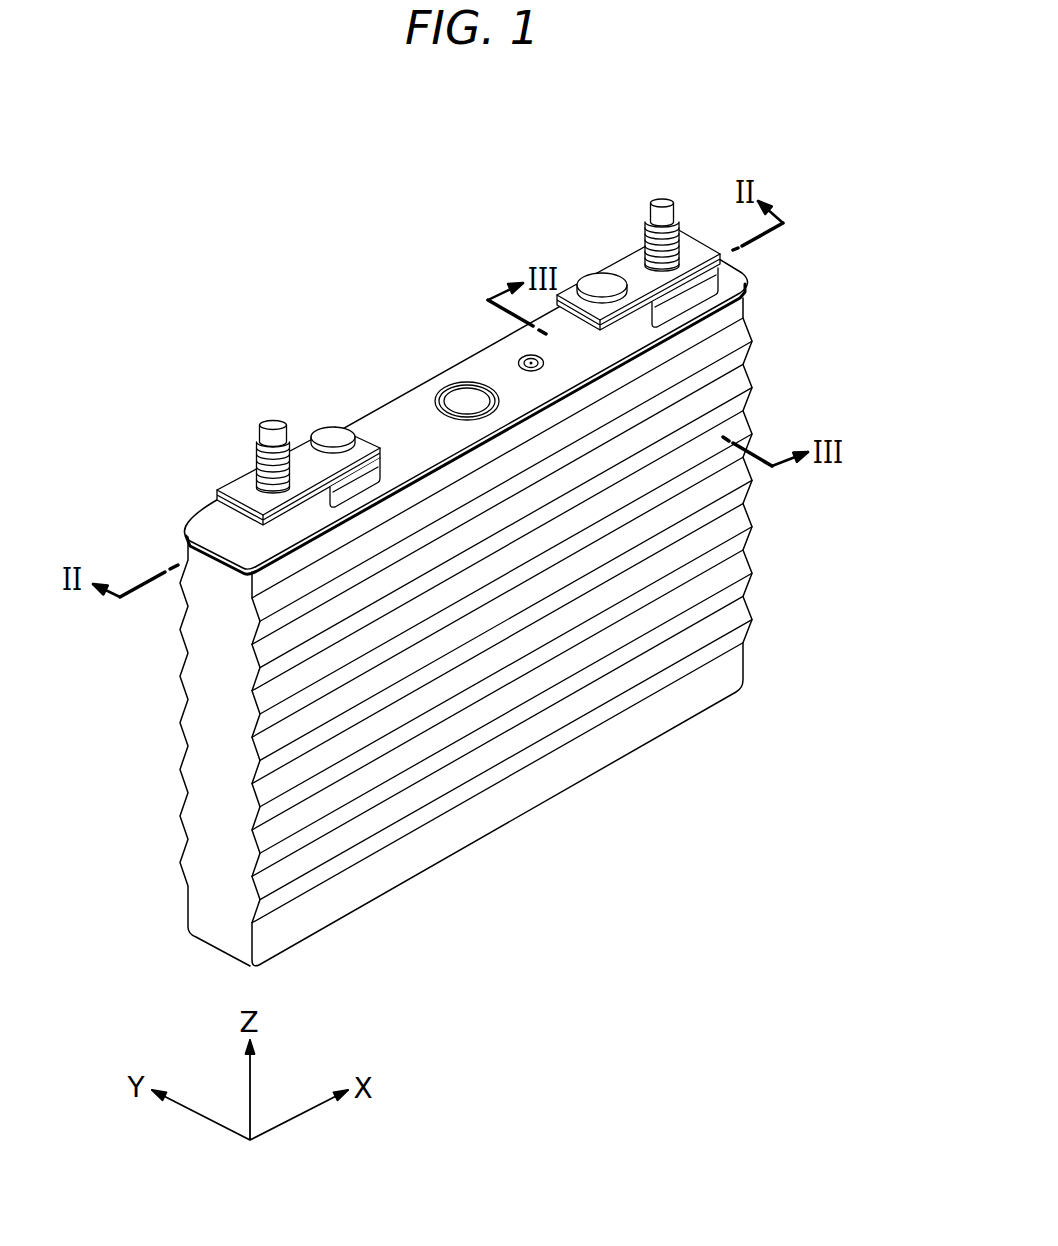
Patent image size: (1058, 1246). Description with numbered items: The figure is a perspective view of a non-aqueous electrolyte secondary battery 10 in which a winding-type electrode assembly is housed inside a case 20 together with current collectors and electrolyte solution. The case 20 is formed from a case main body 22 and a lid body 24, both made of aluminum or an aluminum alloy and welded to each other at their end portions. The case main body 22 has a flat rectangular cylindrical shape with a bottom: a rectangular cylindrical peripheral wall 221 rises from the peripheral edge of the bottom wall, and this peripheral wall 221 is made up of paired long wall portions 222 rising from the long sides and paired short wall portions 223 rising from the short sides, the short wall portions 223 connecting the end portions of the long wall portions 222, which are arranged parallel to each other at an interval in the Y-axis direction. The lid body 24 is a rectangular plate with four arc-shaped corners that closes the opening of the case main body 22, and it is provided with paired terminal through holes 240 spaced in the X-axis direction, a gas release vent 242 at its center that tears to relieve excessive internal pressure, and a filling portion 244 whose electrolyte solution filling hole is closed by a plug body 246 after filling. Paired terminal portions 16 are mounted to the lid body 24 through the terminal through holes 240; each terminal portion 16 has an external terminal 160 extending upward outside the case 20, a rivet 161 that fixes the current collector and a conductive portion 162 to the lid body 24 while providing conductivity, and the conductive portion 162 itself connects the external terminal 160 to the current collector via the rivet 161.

The battery 10 is at (745, 143).
The terminal portion 16 is at (298, 424).
The external terminal 160 is at (256, 447).
The rivet 161 is at (332, 434).
The conductive portion 162 is at (236, 488).
The case 20 is at (876, 262).
The case main body 22 is at (727, 391).
The lid body 24 is at (730, 272).
The peripheral wall 221 is at (213, 862).
The long wall portion 222 is at (329, 853).
The short wall portion 223 is at (214, 783).
The terminal through hole 240 is at (404, 410).
The gas release vent 242 is at (407, 427).
The filling portion 244 is at (450, 384).
The plug body 246 is at (517, 361).